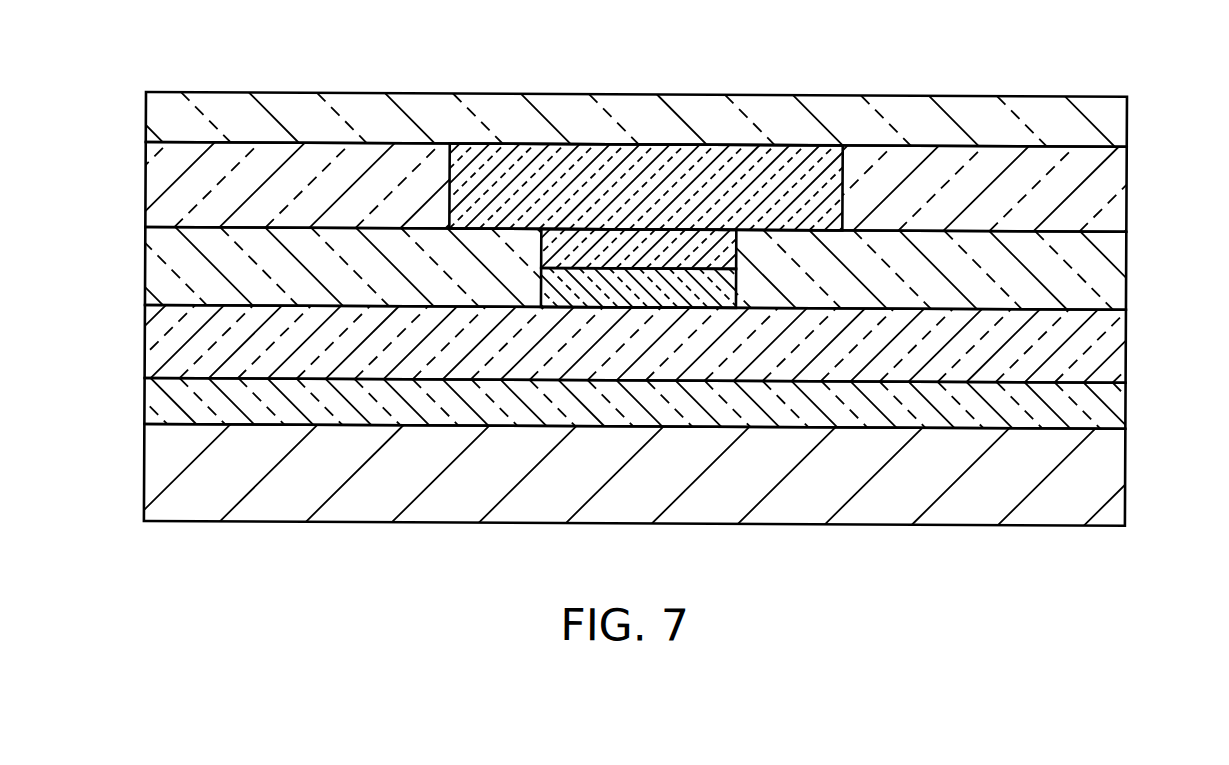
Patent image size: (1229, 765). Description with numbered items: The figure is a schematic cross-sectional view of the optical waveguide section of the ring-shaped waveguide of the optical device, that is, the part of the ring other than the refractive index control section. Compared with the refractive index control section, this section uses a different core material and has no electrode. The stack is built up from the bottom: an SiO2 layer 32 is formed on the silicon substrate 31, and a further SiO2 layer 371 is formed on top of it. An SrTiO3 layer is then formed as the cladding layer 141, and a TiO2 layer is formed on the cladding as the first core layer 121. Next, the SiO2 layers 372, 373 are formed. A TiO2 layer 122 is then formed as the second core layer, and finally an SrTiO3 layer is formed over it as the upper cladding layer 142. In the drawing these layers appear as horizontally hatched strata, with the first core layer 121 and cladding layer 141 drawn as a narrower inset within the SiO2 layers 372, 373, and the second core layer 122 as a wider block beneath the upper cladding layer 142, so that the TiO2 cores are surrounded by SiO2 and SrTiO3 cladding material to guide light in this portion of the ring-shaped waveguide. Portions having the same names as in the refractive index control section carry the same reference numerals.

The silicon substrate 31 is at (1113, 460).
The SiO2 layer 32 is at (1113, 413).
The SiO2 layer 371 is at (1113, 343).
The SiO2 layer 372 is at (1113, 252).
The SiO2 layer 373 is at (1113, 177).
The first core layer 121 is at (603, 238).
The cladding layer 141 is at (713, 275).
The second core layer 122 is at (811, 142).
The upper cladding layer 142 is at (1110, 117).